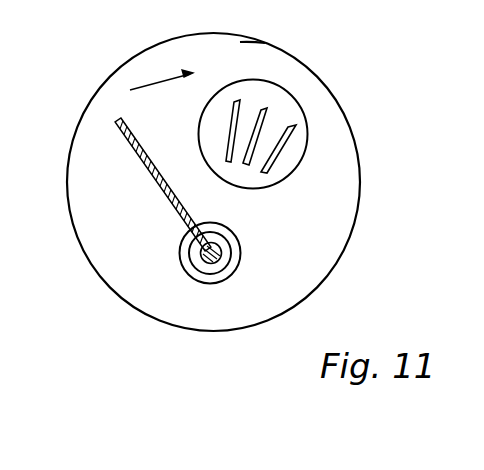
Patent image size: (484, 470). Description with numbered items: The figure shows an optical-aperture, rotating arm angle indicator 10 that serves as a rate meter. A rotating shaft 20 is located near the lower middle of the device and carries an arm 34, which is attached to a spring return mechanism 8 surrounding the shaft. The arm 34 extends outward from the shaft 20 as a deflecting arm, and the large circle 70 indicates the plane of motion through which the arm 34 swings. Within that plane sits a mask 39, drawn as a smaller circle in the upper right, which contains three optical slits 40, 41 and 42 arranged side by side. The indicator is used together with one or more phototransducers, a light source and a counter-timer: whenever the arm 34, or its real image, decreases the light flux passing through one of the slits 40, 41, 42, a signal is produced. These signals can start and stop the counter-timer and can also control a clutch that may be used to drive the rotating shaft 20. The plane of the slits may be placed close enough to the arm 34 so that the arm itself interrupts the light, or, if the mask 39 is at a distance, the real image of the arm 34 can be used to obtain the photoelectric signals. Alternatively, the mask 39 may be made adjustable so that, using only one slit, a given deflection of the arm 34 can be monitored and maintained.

The rotary device / disc 10 is at (152, 82).
The circle 70 is at (252, 38).
The mask 39 is at (305, 155).
The optical slit 40 is at (240, 98).
The optical slit 41 is at (266, 108).
The optical slit 42 is at (295, 125).
The arm 34 is at (117, 122).
The spring return mechanism 8 is at (178, 251).
The rotating shaft 20 is at (216, 256).